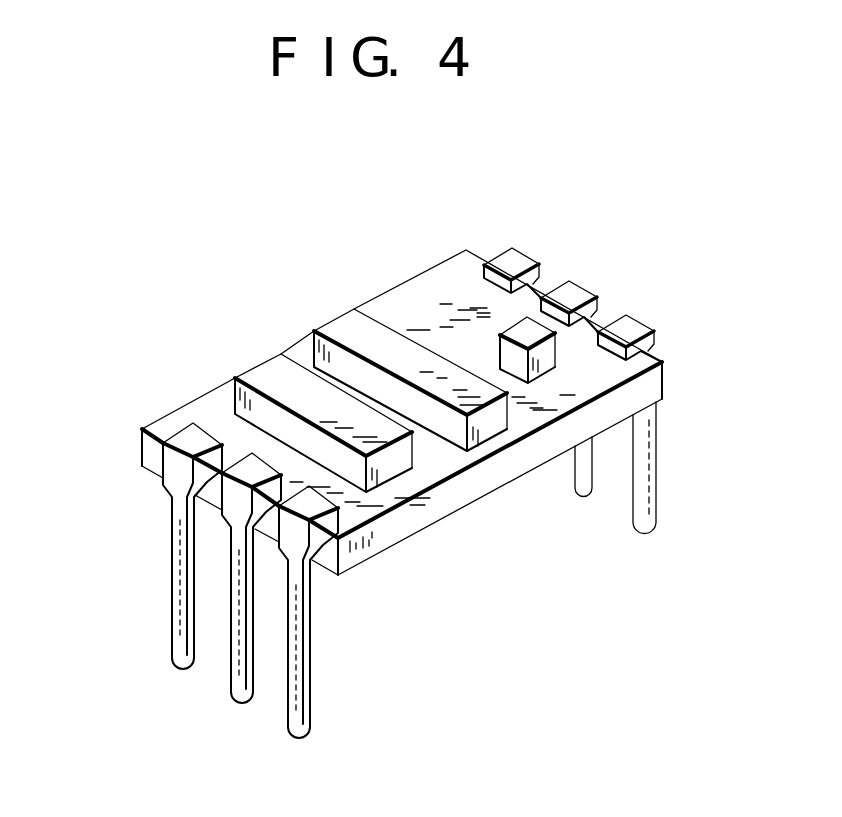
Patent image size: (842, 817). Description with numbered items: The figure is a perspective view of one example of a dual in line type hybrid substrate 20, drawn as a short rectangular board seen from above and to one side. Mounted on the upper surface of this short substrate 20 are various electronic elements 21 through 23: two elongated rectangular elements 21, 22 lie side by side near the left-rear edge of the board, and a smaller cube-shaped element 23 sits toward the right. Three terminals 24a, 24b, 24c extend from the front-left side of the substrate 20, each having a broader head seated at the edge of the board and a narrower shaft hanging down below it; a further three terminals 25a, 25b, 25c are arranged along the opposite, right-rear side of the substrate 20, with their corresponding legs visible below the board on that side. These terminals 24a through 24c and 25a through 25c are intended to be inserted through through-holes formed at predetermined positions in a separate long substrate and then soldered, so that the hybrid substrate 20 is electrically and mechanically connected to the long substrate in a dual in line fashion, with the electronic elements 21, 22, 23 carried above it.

The dual in line type hybrid substrate 20 is at (468, 495).
The electronic element 21 is at (256, 376).
The electronic element 22 is at (347, 328).
The electronic element 23 is at (512, 330).
The terminal 24a is at (172, 603).
The terminal 24b is at (232, 661).
The terminal 24c is at (307, 694).
The terminal 25a is at (521, 259).
The terminal 25b is at (579, 297).
The terminal 25c is at (636, 327).